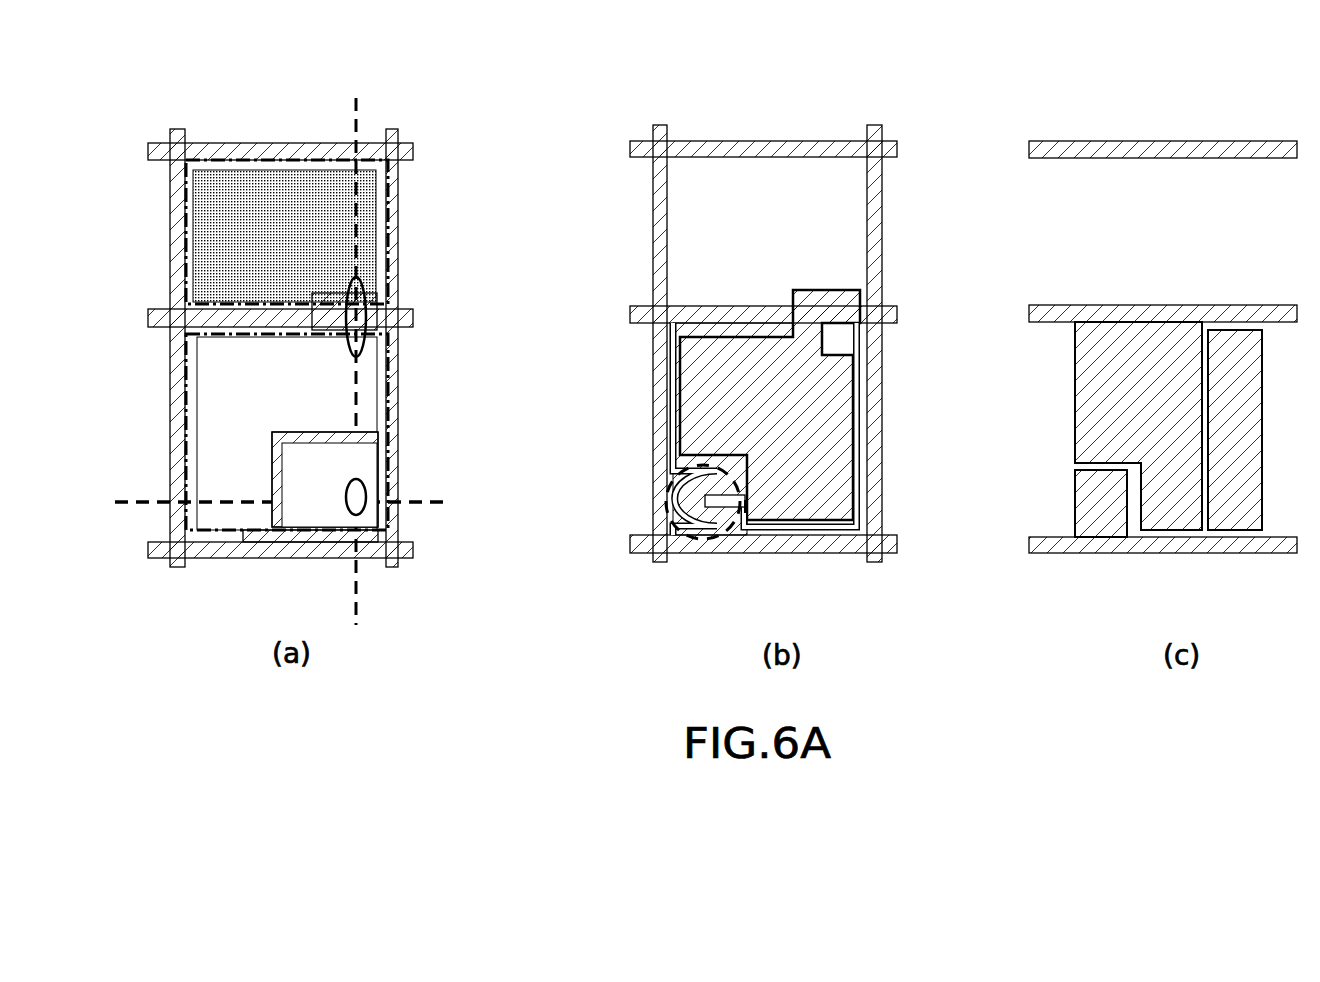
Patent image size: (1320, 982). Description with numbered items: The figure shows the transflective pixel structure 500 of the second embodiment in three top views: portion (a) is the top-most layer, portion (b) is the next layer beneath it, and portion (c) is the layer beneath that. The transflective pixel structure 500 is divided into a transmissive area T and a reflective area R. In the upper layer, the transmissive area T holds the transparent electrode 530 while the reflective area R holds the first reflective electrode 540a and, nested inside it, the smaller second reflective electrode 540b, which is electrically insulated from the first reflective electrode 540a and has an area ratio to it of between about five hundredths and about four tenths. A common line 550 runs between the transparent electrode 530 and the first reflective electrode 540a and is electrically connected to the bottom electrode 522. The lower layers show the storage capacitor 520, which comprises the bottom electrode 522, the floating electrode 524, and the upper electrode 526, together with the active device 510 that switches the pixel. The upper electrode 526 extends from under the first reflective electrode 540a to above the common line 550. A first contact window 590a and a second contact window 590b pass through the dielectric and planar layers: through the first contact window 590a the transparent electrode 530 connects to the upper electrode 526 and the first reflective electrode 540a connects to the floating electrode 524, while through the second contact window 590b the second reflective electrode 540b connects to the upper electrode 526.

The transflective pixel structure 500 is at (220, 620).
The transmissive area T is at (187, 193).
The reflective area R is at (187, 373).
The transparent electrode 530 is at (210, 228).
The first reflective electrode 540a is at (220, 413).
The second reflective electrode 540b is at (292, 470).
The first contact window 590a is at (368, 293).
The second contact window 590b is at (367, 483).
The common line 550 is at (640, 304).
The storage capacitor 520 is at (562, 332).
The bottom electrode 522 is at (677, 428).
The floating electrode 524 is at (835, 340).
The upper electrode 526 is at (713, 400).
The active device 510 is at (677, 476).